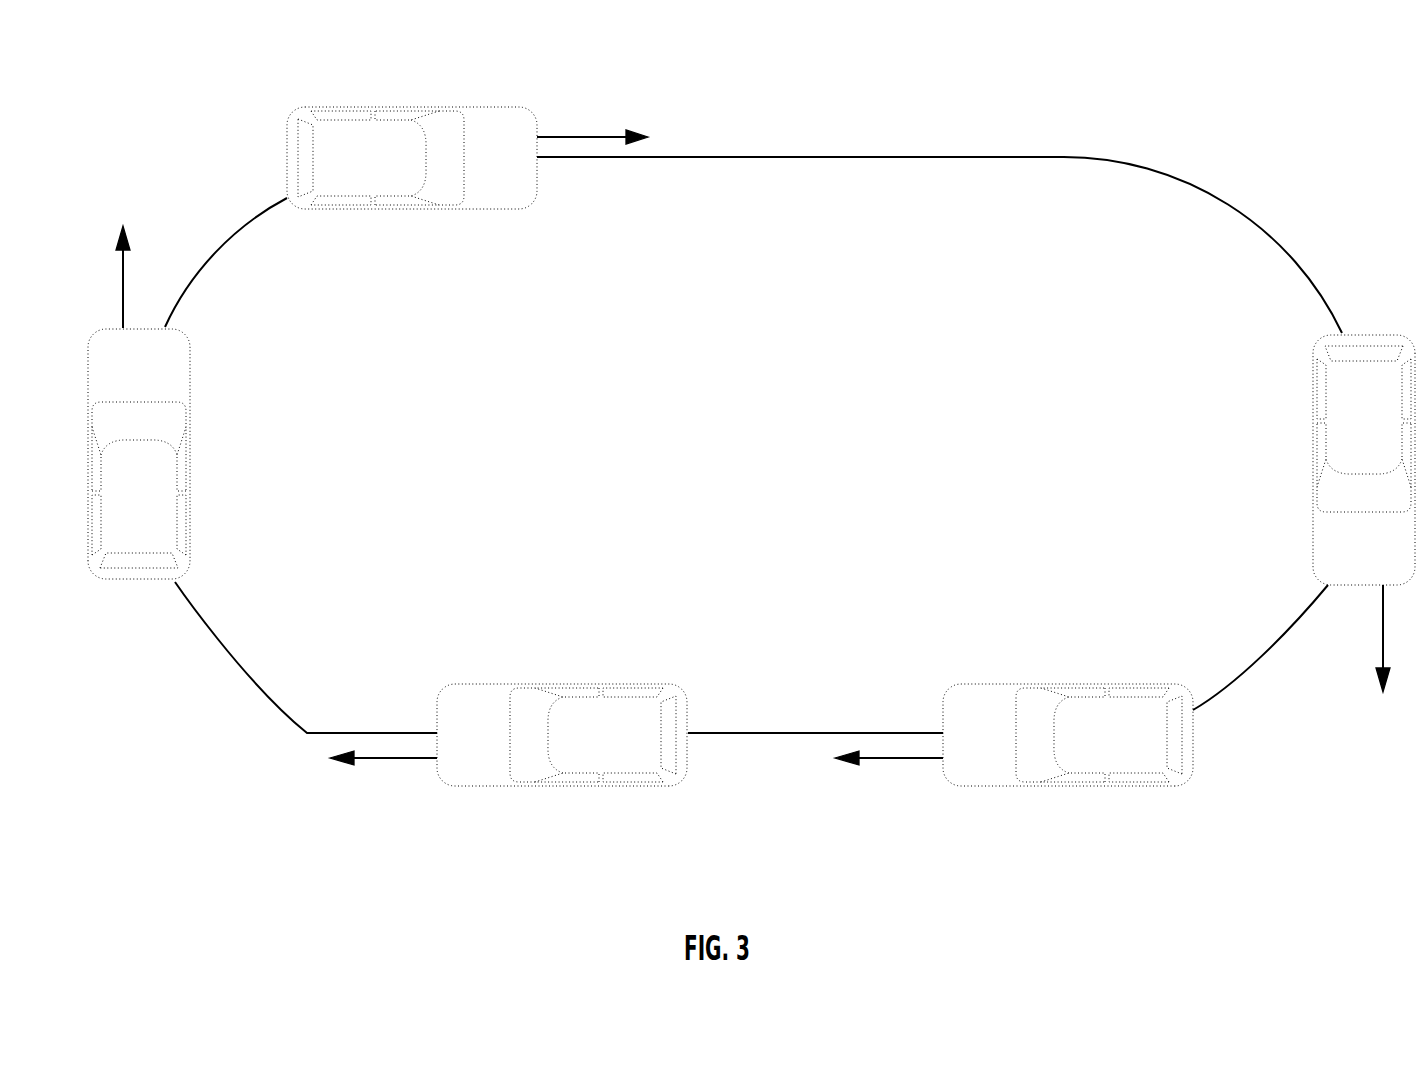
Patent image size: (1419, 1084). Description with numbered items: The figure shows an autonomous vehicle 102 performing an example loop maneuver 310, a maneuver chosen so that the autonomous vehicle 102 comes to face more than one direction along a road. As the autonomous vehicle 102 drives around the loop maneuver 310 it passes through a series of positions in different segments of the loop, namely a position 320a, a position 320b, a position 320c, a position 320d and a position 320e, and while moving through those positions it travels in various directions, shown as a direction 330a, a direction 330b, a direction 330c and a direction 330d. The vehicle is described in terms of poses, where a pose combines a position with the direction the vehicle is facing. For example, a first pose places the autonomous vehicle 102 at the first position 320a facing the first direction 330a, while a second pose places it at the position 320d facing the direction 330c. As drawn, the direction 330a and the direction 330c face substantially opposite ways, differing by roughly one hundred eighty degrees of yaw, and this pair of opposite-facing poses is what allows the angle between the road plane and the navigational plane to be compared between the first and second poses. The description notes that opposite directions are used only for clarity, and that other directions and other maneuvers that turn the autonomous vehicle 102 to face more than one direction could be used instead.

The autonomous vehicle 102 is at (751, 446).
The loop maneuver 310 is at (940, 157).
The first position 320a is at (415, 228).
The position 320b is at (1262, 421).
The position 320c is at (1092, 645).
The position 320d is at (593, 648).
The position 320e is at (230, 493).
The first direction 330a is at (578, 137).
The direction 330b is at (1382, 632).
The direction 330c is at (383, 758).
The direction 330d is at (123, 268).